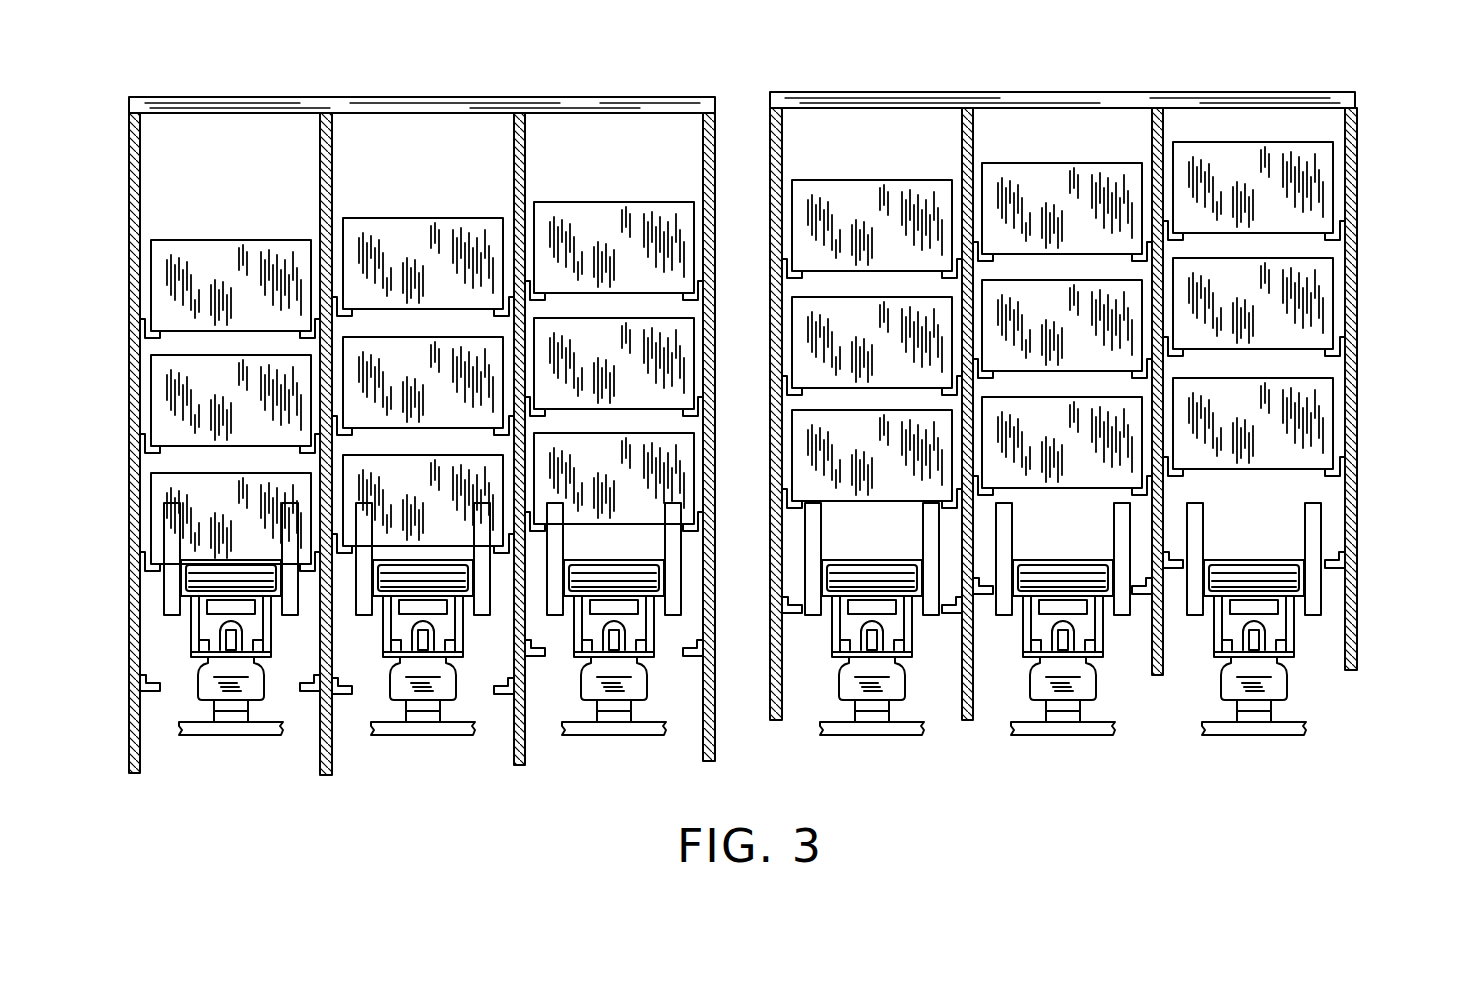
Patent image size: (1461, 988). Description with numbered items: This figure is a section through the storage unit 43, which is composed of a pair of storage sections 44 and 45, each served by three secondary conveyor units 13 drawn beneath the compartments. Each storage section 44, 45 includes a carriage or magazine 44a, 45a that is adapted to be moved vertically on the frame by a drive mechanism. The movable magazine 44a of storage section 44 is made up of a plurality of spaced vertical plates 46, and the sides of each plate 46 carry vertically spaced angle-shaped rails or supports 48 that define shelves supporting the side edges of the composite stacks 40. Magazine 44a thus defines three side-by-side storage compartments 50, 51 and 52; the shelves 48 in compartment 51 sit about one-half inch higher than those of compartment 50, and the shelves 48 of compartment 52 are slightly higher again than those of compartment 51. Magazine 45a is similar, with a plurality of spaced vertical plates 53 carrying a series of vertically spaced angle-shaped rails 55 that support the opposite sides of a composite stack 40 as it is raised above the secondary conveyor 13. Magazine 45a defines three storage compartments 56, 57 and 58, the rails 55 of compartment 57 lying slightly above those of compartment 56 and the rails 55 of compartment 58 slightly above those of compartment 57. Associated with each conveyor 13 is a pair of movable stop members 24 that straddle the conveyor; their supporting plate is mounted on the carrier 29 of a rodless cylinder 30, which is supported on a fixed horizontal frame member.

The secondary conveyor unit 13 is at (178, 585).
The movable stop members 24 is at (178, 528).
The carrier 29 is at (451, 680).
The rodless cylinder 30 is at (234, 690).
The composite stack 40 is at (231, 278).
The storage unit 43 is at (1360, 155).
The storage section 44 is at (127, 160).
The movable magazine 44a is at (565, 100).
The storage section 45 is at (1318, 85).
The magazine 45a is at (1150, 115).
The vertical plates 46 is at (142, 168).
The angle-shaped rails or supports 48 is at (145, 347).
The storage compartment 50 is at (248, 125).
The storage compartment 51 is at (465, 128).
The storage compartment 52 is at (648, 125).
The vertical plates 53 is at (782, 150).
The angle-shaped rails 55 is at (792, 276).
The storage compartment 56 is at (885, 125).
The storage compartment 57 is at (1083, 125).
The storage compartment 58 is at (1285, 100).